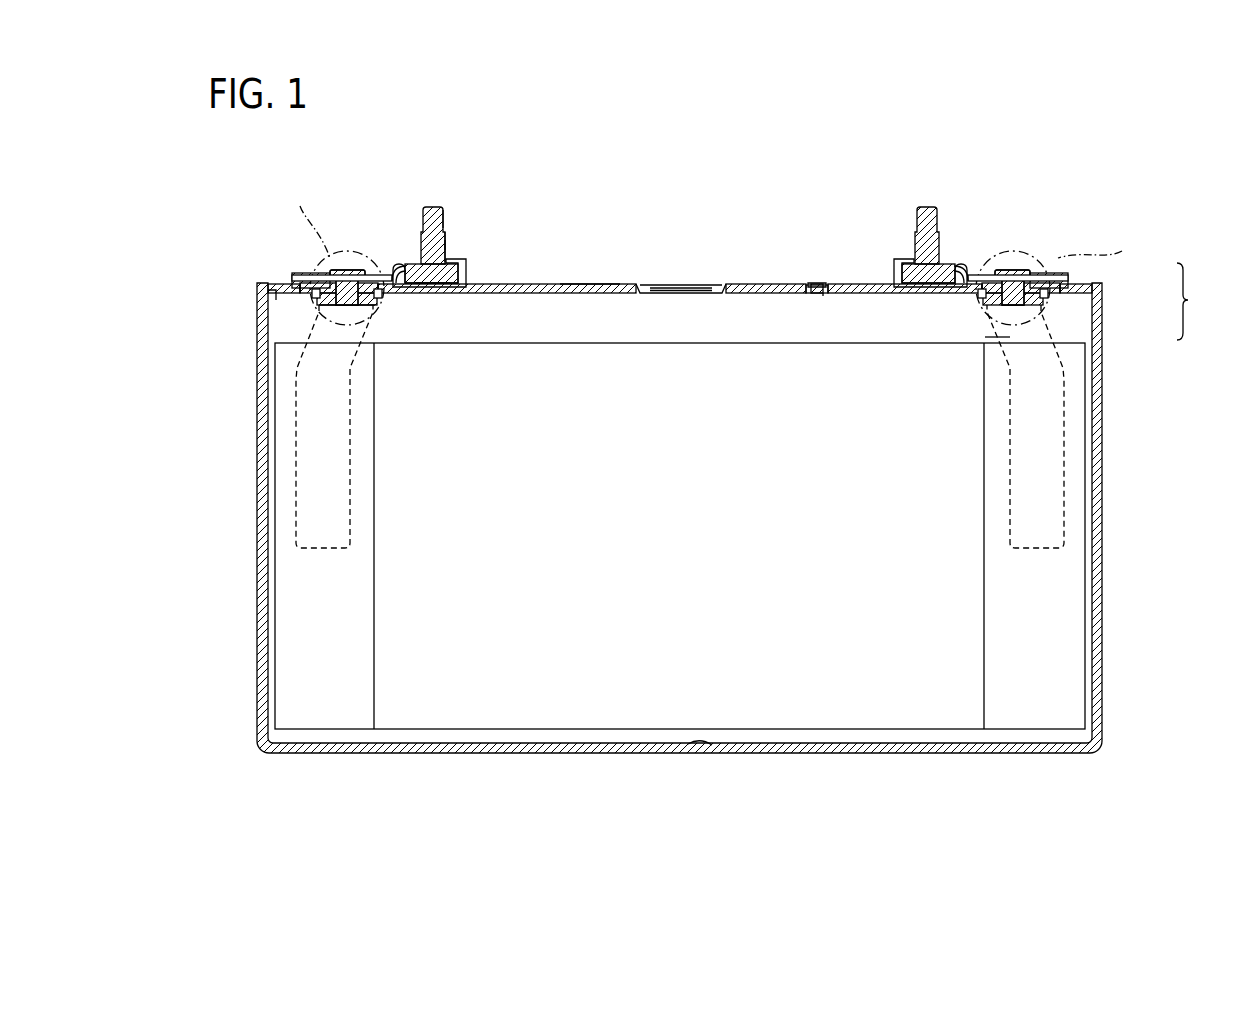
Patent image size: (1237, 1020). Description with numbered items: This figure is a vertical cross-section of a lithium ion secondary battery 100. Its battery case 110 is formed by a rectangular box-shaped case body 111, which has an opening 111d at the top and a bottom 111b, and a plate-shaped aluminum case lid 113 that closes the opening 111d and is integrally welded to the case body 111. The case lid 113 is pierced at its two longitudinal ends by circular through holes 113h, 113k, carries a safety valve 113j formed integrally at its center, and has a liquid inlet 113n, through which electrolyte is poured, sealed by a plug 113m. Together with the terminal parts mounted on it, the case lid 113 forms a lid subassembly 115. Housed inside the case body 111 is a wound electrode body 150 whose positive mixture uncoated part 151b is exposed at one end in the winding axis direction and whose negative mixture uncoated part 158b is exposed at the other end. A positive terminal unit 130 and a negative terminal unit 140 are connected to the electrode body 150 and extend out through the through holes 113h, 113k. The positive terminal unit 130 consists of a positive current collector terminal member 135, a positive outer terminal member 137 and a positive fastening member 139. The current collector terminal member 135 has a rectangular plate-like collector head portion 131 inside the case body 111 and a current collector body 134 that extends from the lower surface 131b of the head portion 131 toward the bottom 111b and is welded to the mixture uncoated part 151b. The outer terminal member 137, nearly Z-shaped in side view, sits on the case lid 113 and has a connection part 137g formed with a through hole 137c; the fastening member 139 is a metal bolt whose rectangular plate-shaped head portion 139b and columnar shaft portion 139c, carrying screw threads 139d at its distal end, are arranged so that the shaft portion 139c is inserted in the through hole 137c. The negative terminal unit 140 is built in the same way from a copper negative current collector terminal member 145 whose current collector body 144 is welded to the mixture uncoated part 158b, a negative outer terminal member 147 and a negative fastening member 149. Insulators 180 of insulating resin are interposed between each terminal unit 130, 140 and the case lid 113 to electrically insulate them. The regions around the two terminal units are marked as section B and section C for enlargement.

The battery 100 is at (757, 203).
The battery case 110 is at (1201, 301).
The case body 111 is at (1097, 320).
The bottom 111b is at (714, 746).
The opening 111d is at (278, 298).
The case lid 113 is at (1102, 289).
The through hole 113h is at (326, 282).
The safety valve 113j is at (676, 284).
The through hole 113k is at (1022, 278).
The plug 113m is at (815, 284).
The liquid inlet 113n is at (823, 294).
The lid subassembly 115 is at (592, 276).
The positive terminal unit 130 is at (360, 350).
The collector head portion 131 is at (327, 300).
The lower surface 131b is at (348, 337).
The current collector body 134 is at (296, 410).
The positive current collector terminal member 135 is at (340, 318).
The positive outer terminal member 137 is at (383, 272).
The connection part 137g is at (406, 262).
The through hole 137c is at (447, 233).
The positive fastening member 139 is at (433, 207).
The head portion 139b is at (428, 270).
The shaft portion 139c is at (447, 252).
The screw threads 139d is at (447, 214).
The negative terminal unit 140 is at (1040, 349).
The current collector body 144 is at (1063, 412).
The negative current collector terminal member 145 is at (1010, 337).
The negative outer terminal member 147 is at (968, 270).
The negative fastening member 149 is at (926, 207).
The electrode body 150 is at (505, 707).
The mixture uncoated part 151b is at (317, 613).
The mixture uncoated part 158b is at (1042, 613).
The insulator 180 is at (466, 276).
The section B is at (309, 221).
The section C is at (1099, 250).